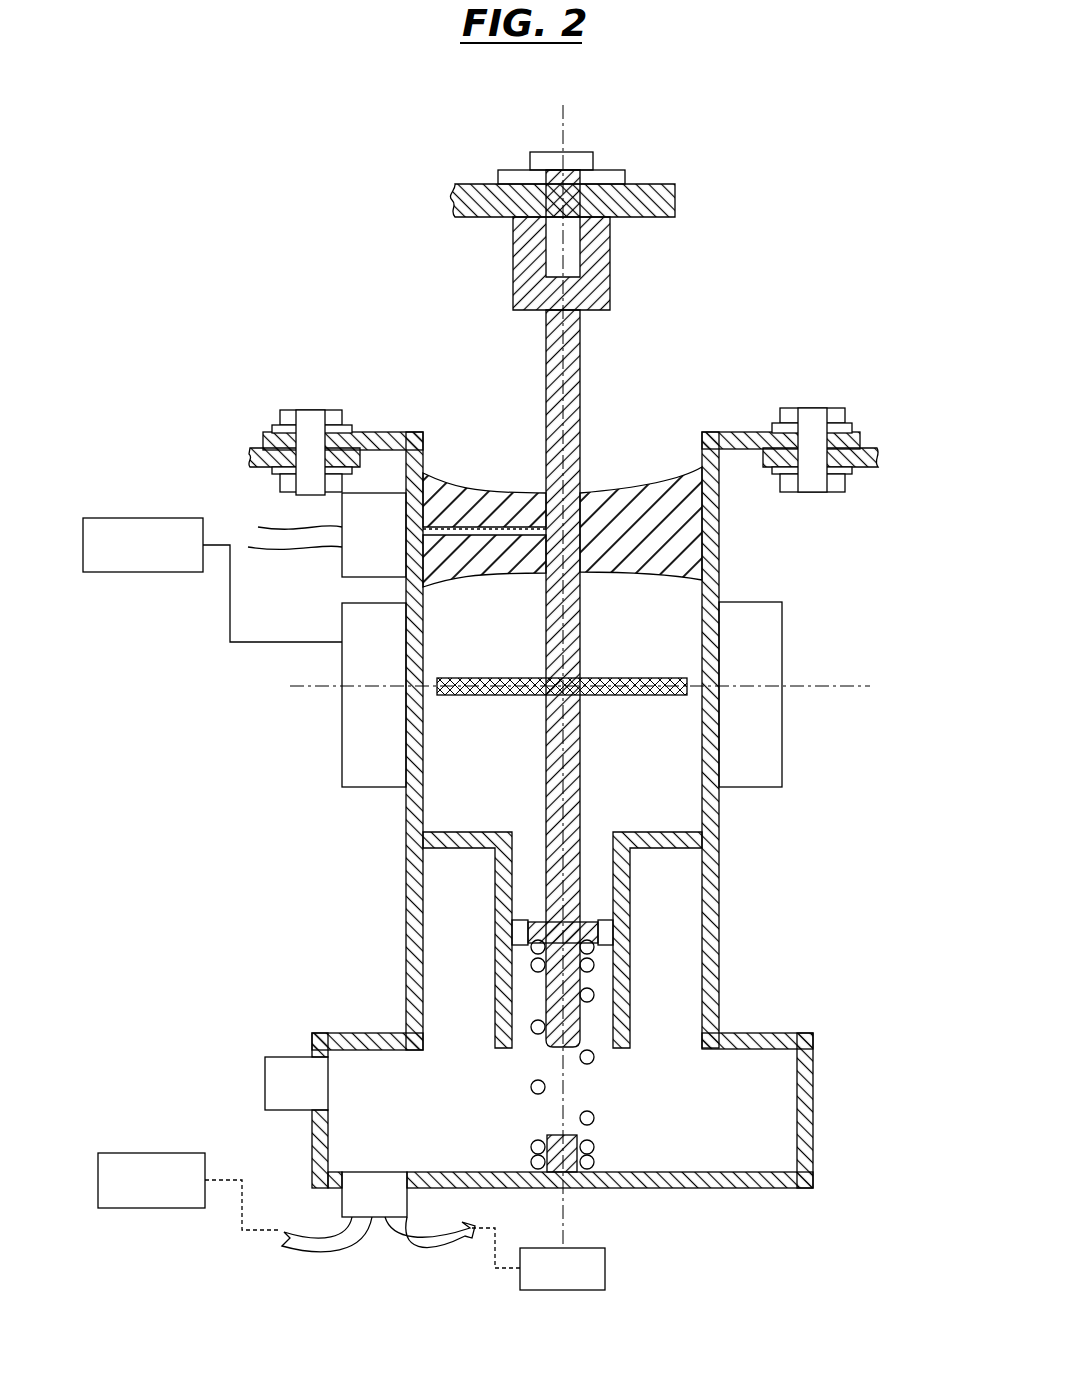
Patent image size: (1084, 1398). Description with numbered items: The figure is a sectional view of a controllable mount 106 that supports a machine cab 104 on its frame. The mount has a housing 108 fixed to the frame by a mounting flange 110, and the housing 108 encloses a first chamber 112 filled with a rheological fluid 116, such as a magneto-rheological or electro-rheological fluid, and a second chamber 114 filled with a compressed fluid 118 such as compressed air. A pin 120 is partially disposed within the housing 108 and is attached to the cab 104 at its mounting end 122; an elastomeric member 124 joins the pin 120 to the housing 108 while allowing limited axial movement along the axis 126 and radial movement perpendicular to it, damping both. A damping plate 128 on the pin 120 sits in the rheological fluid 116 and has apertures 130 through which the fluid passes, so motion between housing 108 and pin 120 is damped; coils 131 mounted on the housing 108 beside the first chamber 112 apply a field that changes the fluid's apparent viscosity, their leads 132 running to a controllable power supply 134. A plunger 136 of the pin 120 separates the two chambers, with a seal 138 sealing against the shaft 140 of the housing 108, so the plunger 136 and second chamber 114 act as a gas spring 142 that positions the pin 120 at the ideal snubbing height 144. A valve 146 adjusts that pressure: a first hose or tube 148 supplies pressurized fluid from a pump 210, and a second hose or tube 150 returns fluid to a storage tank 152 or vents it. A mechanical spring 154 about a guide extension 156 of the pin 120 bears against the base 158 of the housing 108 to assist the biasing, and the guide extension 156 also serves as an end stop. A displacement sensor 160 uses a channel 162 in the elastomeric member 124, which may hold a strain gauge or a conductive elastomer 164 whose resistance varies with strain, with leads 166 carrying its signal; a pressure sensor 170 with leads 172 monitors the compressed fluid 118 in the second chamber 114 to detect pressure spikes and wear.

The cab 104 is at (675, 200).
The controllable mount 106 is at (400, 296).
The housing 108 is at (718, 810).
The mounting flange 110 is at (735, 432).
The first chamber 112 is at (657, 645).
The second chamber 114 is at (479, 992).
The rheological fluid 116 is at (673, 610).
The compressed fluid 118 is at (667, 953).
The pin 120 is at (553, 762).
The mounting end 122 is at (610, 233).
The elastomeric member 124 is at (613, 492).
The axis 126 is at (567, 140).
The damping plate 128 is at (440, 695).
The apertures 130 is at (702, 678).
The coils 131 is at (342, 712).
The leads 132 is at (285, 642).
The controllable power supply 134 is at (136, 518).
The plunger 136 is at (590, 920).
The seal 138 is at (630, 930).
The shaft 140 is at (513, 873).
The gas spring 142 is at (615, 1100).
The ideal snubbing height 144 is at (800, 686).
The valve 146 is at (372, 1208).
The first hose or tube 148 is at (285, 1245).
The second hose or tube 150 is at (440, 1222).
The storage tank 152 is at (592, 1250).
The mechanical spring 154 is at (535, 1030).
The guide extension 156 is at (598, 1040).
The base 158 is at (550, 1135).
The sensor 160 is at (368, 493).
The channel 162 is at (470, 487).
The conductive elastomer 164 is at (498, 537).
The leads 166 is at (258, 527).
The pressure sensor 170 is at (330, 1108).
The leads 172 is at (265, 1095).
The pump 210 is at (170, 1153).